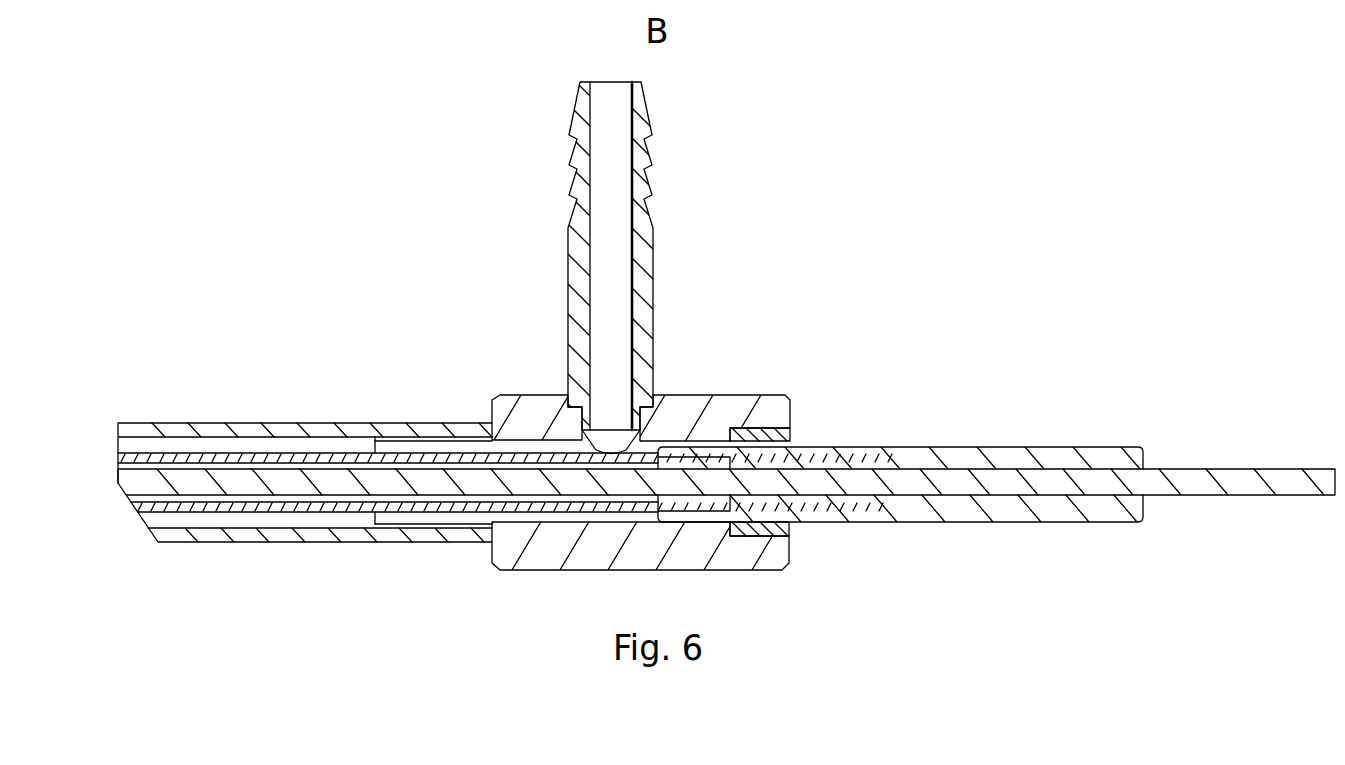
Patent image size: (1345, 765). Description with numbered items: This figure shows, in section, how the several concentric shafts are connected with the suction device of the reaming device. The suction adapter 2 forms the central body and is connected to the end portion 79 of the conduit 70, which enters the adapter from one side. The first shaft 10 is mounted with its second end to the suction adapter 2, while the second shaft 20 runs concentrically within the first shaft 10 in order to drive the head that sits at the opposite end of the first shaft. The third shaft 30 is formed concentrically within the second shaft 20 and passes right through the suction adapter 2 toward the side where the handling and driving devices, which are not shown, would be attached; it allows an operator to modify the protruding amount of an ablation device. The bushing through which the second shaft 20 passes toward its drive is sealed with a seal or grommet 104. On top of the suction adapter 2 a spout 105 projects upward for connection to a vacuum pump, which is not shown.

The suction adapter 2 is at (767, 400).
The first shaft 10 is at (320, 532).
The second shaft 20 is at (262, 450).
The third shaft 30 is at (1188, 482).
The conduit 70 is at (303, 446).
The end portion of the conduit 79 is at (367, 446).
The seal or grommet 104 is at (792, 432).
The spout 105 is at (646, 278).